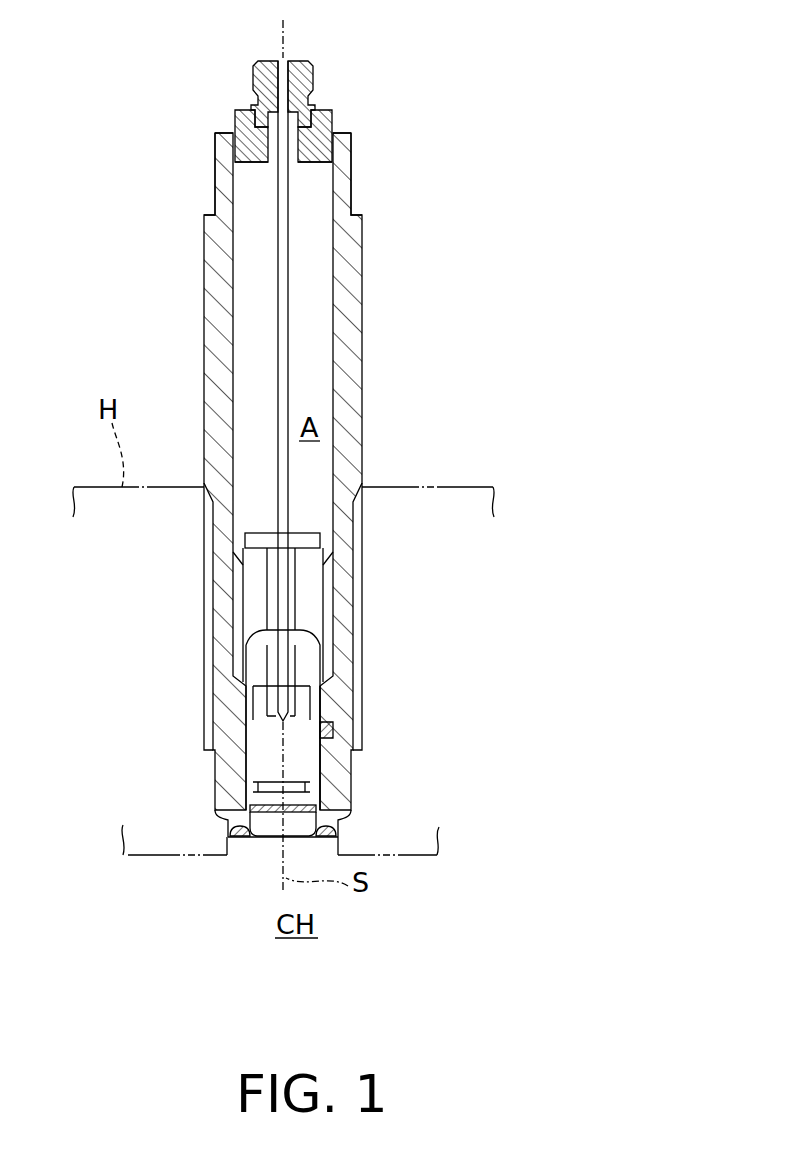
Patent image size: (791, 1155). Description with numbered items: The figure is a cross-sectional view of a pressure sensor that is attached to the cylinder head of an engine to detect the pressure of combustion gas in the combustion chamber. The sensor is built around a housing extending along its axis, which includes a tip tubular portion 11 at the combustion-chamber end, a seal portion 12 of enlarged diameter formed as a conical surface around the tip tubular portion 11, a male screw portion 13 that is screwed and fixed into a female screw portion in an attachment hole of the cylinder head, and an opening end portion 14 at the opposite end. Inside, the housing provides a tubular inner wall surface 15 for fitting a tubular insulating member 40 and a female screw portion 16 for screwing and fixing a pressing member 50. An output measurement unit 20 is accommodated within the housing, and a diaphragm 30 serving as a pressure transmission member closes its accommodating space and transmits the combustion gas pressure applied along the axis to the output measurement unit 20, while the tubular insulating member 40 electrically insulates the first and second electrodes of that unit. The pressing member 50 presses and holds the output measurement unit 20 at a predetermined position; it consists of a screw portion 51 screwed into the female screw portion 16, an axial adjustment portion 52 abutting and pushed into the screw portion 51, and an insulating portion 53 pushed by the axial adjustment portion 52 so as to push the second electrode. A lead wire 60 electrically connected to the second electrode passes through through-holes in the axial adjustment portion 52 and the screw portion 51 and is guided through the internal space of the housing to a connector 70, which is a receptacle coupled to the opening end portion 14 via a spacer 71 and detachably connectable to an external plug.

The tip tubular portion 11 is at (338, 823).
The seal portion 12 is at (352, 810).
The male screw portion 13 is at (363, 702).
The opening end portion 14 is at (333, 136).
The tubular inner wall surface 15 is at (356, 749).
The female screw portion 16 is at (334, 586).
The output measurement unit 20 is at (298, 772).
The diaphragm 30 is at (247, 839).
The tubular insulating member 40 is at (332, 732).
The pressing member 50 is at (398, 679).
The screw portion 51 is at (313, 620).
The axial adjustment portion 52 is at (310, 665).
The insulating portion 53 is at (307, 693).
The lead wire 60 is at (289, 367).
The connector 70 is at (316, 74).
The spacer 71 is at (331, 109).